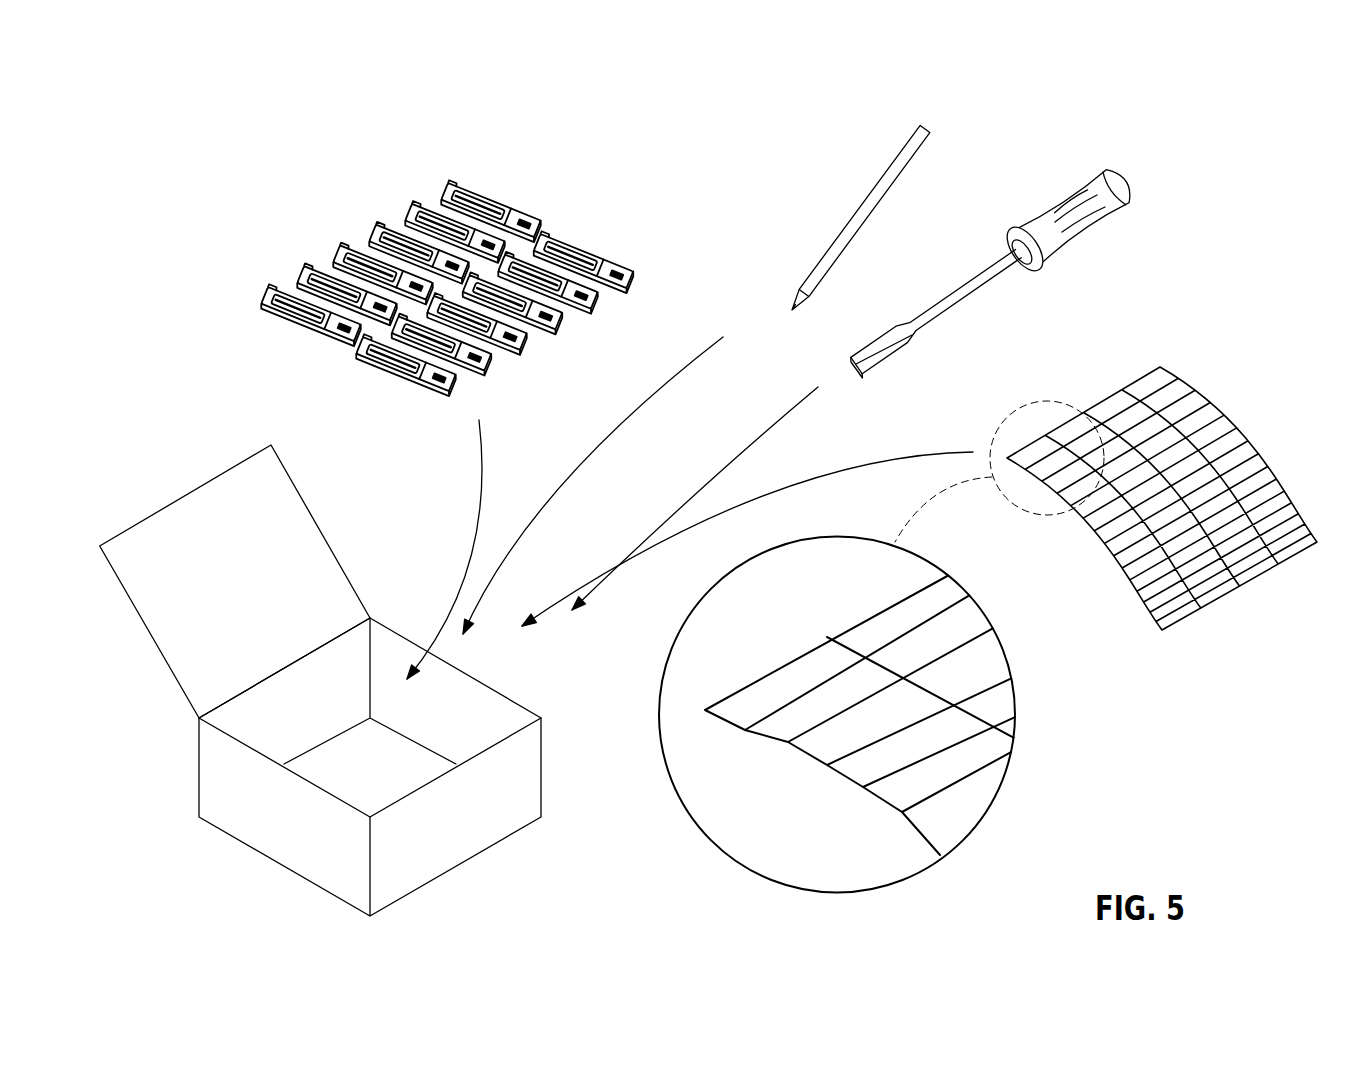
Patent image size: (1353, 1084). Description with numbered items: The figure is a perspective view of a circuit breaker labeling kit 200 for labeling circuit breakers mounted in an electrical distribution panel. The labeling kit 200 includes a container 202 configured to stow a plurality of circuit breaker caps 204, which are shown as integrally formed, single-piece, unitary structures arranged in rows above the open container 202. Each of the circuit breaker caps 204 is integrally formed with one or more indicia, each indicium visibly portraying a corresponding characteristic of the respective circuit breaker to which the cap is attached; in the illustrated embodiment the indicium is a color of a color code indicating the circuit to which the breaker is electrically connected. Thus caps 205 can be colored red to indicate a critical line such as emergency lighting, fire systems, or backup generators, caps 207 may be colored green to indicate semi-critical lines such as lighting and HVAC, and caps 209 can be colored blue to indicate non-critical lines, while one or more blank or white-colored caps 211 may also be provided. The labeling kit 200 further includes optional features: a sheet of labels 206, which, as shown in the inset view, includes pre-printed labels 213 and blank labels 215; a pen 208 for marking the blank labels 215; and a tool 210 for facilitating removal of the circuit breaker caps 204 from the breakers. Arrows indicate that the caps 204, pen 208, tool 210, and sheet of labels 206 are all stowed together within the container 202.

The circuit breaker labeling kit 200 is at (242, 118).
The container 202 is at (199, 485).
The circuit breaker caps 204 is at (545, 195).
The caps 205 is at (283, 290).
The sheet of labels 206 is at (1217, 395).
The caps 207 is at (460, 195).
The pen 208 is at (868, 207).
The caps 209 is at (553, 323).
The tool 210 is at (1110, 182).
The blank caps 211 is at (625, 288).
The pre-printed labels 213 is at (885, 608).
The blank labels 215 is at (1040, 622).